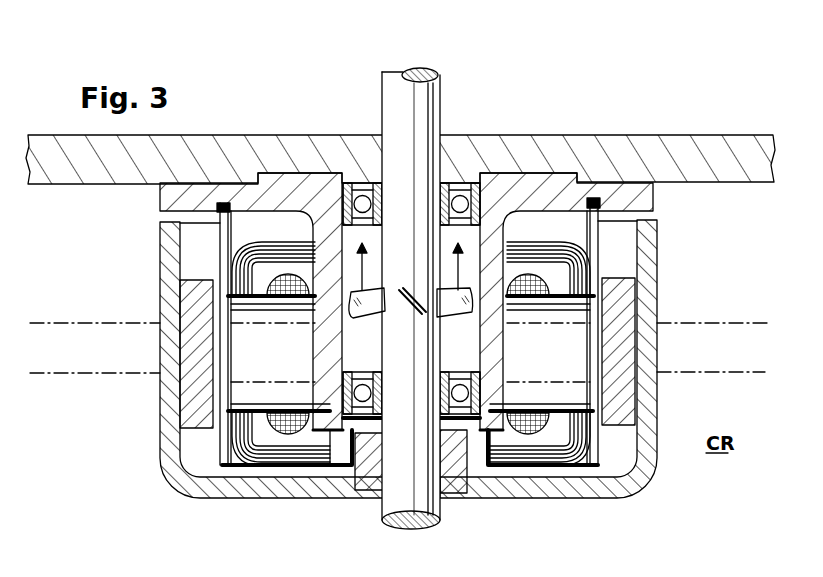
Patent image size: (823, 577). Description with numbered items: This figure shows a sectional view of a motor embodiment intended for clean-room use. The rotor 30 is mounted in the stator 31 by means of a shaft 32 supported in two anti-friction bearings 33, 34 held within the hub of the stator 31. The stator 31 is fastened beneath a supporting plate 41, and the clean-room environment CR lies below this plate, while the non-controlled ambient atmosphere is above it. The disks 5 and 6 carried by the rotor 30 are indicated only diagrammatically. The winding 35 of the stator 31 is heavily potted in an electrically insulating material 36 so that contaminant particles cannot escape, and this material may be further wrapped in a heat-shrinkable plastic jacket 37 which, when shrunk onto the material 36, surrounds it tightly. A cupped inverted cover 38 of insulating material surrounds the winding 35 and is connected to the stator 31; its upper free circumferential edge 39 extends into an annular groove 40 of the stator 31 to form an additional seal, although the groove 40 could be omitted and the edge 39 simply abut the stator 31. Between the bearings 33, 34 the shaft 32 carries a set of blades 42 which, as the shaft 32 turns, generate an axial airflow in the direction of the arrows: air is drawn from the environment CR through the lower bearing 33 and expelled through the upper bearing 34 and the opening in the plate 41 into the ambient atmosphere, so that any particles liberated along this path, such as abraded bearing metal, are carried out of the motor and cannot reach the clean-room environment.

The disk 5 is at (62, 376).
The disk 6 is at (58, 308).
The rotor 30 is at (617, 480).
The stator 31 is at (176, 200).
The shaft 32 is at (399, 88).
The anti-friction bearing 33 is at (463, 418).
The anti-friction bearing 34 is at (458, 183).
The winding 35 is at (288, 427).
The electrically insulating potting material 36 is at (548, 456).
The upper stator coil winding 37 is at (556, 234).
The cupped inverted cover 38 is at (592, 257).
The upper free circumferential edge 39 is at (218, 222).
The annular groove 40 is at (595, 197).
The supporting plate 41 is at (290, 155).
The blades 42 is at (455, 316).